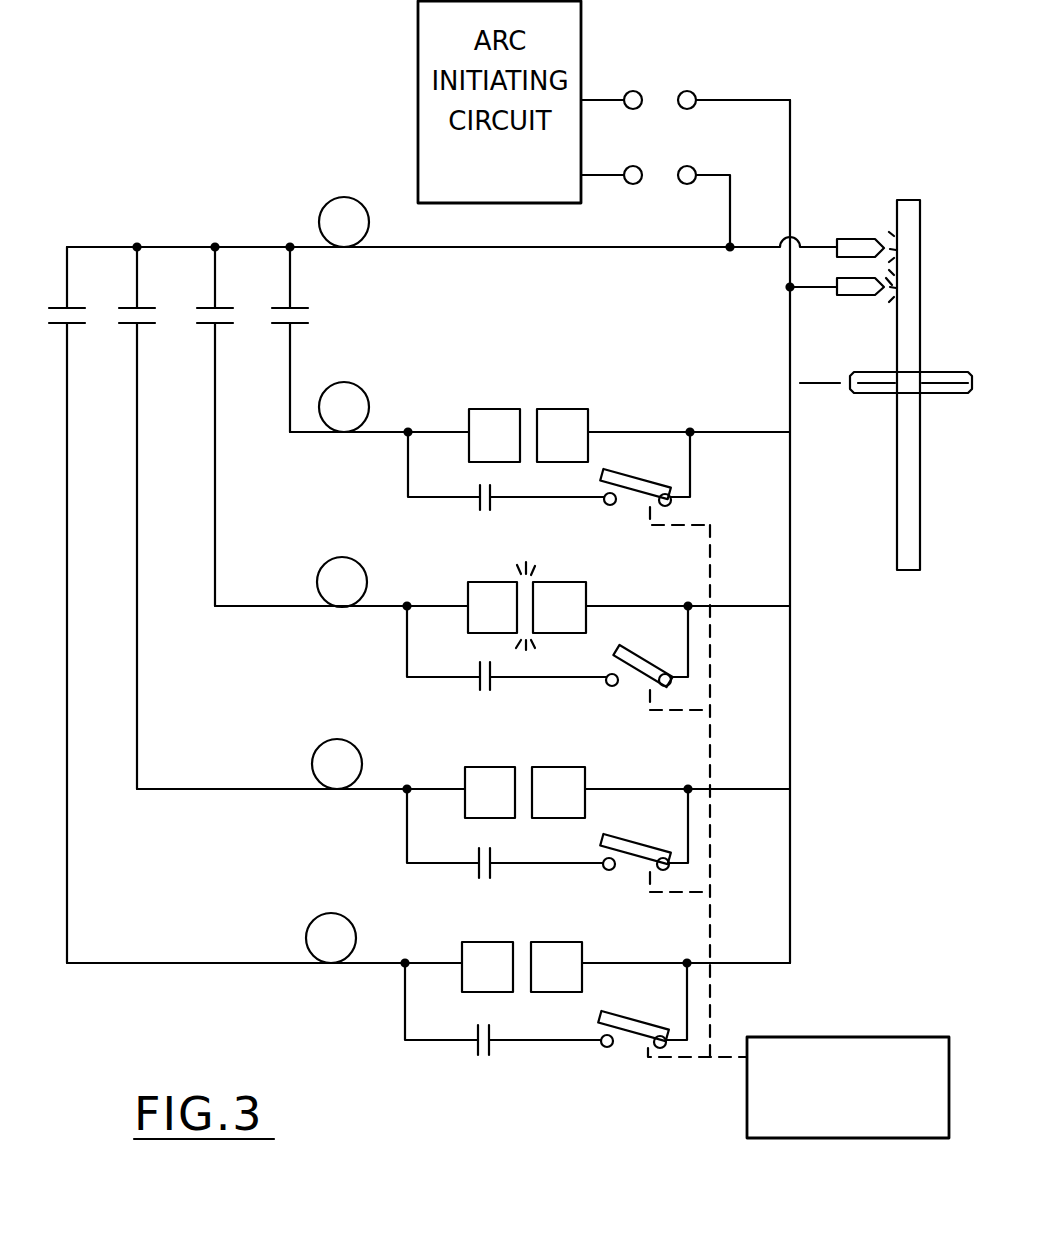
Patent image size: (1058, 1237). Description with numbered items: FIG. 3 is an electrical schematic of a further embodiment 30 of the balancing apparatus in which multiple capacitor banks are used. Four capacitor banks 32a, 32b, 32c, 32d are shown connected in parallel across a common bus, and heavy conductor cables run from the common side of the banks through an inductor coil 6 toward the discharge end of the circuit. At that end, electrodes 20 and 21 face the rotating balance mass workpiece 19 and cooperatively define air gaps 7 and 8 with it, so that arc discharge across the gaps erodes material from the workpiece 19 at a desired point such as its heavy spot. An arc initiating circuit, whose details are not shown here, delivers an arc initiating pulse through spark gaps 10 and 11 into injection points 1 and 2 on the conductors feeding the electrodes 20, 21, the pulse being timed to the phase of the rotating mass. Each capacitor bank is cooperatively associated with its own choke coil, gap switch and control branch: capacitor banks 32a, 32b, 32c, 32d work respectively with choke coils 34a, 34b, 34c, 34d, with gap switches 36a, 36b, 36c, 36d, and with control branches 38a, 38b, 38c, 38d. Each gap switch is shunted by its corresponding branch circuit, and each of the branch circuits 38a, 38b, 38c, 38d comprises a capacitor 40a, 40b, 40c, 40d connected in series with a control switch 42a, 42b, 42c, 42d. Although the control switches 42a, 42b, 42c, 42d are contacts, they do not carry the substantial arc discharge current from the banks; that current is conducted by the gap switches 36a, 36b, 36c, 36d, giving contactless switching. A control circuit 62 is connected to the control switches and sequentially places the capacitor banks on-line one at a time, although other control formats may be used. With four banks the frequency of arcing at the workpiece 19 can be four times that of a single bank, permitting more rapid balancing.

The injection point 1 is at (789, 289).
The injection point 2 is at (728, 250).
The inductor coil 6 is at (350, 200).
The air gap 7 is at (889, 300).
The air gap 8 is at (892, 236).
The spark gap 10 is at (662, 160).
The spark gap 11 is at (661, 80).
The balance mass workpiece 19 is at (895, 500).
The electrode 20 is at (856, 297).
The electrode 21 is at (853, 238).
The embodiment 30 is at (826, 890).
The capacitor bank 32a is at (297, 308).
The capacitor bank 32b is at (225, 323).
The capacitor bank 32c is at (147, 323).
The capacitor bank 32d is at (77, 323).
The choke coil 34a is at (338, 383).
The choke coil 34b is at (340, 556).
The choke coil 34c is at (328, 740).
The choke coil 34d is at (322, 912).
The gap switch 36a is at (530, 408).
The gap switch 36b is at (537, 578).
The gap switch 36c is at (524, 765).
The gap switch 36d is at (522, 940).
The control branch 38a is at (515, 497).
The control branch 38b is at (510, 677).
The control branch 38c is at (516, 863).
The control branch 38d is at (515, 1042).
The capacitor 40a is at (492, 505).
The capacitor 40b is at (475, 685).
The capacitor 40c is at (476, 870).
The capacitor 40d is at (492, 1048).
The control switch 42a is at (613, 480).
The control switch 42b is at (640, 703).
The control switch 42c is at (612, 845).
The control switch 42d is at (625, 1048).
The control circuit 62 is at (843, 1037).